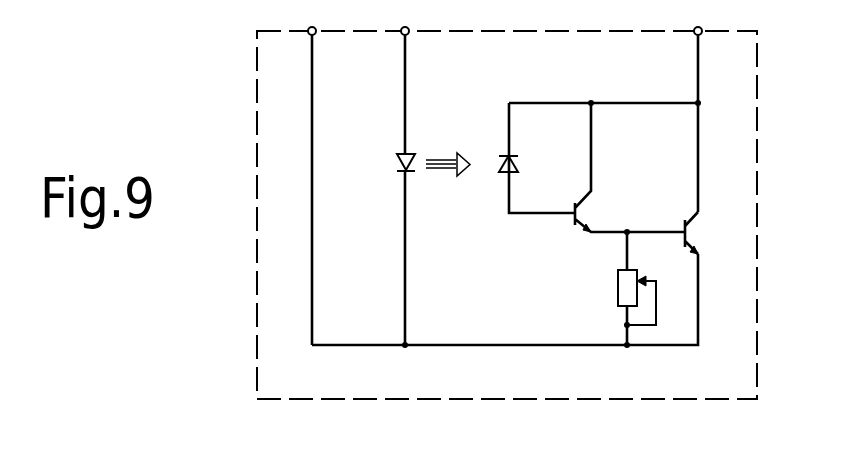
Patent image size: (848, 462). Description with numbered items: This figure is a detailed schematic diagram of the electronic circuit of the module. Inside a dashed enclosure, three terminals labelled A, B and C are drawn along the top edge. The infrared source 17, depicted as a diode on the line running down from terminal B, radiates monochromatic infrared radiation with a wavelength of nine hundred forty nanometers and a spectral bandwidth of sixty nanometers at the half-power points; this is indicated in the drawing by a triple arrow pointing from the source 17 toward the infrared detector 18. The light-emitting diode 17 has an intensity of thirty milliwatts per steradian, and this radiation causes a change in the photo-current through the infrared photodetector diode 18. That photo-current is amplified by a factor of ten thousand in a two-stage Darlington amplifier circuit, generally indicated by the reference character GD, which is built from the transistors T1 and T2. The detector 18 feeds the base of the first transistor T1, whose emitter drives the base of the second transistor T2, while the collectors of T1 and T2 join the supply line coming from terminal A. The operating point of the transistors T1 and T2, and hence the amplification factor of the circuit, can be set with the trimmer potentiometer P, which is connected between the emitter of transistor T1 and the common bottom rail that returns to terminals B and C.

The infrared source 17 is at (395, 155).
The infrared detector 18 is at (521, 168).
The transistor T1 is at (618, 167).
The transistor T2 is at (679, 228).
The trimmer potentiometer P is at (618, 288).
The gate drive GD is at (567, 233).
The terminal A is at (698, 108).
The terminal B is at (405, 175).
The terminal C is at (312, 175).